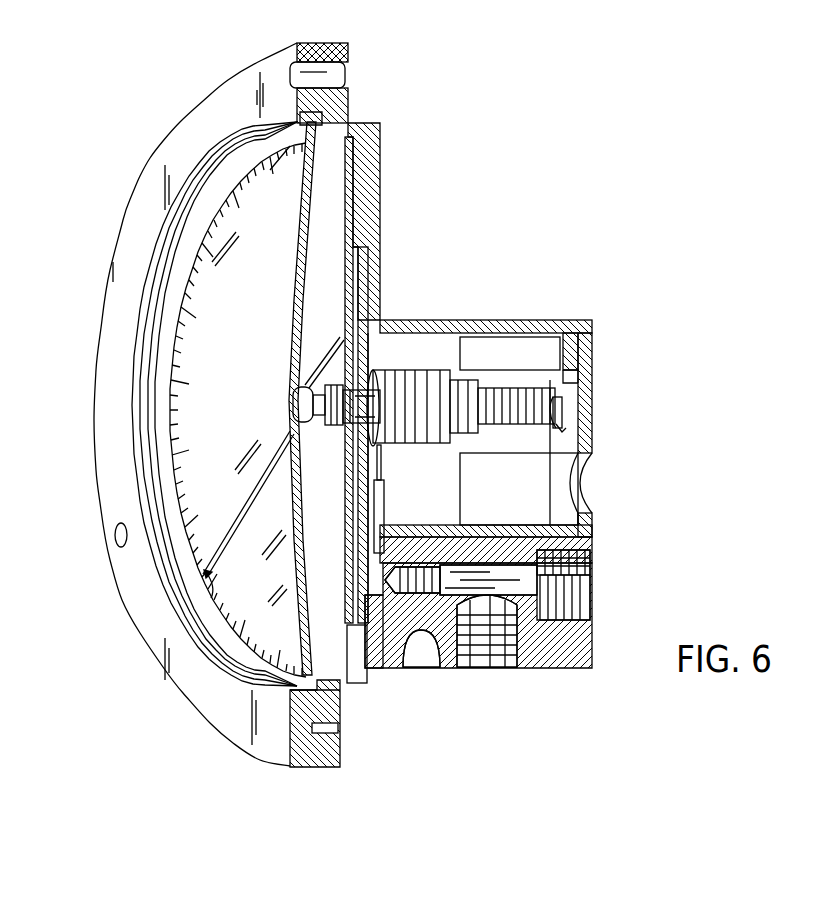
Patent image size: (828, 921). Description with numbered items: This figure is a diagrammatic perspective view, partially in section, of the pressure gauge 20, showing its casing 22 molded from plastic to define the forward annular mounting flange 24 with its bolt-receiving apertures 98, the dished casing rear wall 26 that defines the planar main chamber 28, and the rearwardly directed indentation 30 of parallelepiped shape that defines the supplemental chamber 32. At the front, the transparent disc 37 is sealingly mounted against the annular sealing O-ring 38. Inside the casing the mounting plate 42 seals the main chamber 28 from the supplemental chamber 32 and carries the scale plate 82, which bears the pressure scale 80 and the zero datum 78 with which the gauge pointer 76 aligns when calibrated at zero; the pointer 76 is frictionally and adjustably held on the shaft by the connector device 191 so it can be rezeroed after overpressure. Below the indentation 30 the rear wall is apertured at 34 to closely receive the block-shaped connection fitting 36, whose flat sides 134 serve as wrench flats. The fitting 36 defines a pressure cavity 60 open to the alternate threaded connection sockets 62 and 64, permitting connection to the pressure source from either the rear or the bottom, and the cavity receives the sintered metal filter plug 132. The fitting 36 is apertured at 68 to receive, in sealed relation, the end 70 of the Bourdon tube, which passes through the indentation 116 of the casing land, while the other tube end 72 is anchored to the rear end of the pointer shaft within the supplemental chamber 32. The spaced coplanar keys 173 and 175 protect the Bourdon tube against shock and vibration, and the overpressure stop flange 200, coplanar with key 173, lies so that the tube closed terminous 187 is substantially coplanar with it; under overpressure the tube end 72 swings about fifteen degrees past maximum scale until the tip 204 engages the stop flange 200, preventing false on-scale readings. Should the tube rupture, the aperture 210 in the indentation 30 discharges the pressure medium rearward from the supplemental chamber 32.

The pressure gauge 20 is at (455, 100).
The casing 22 is at (384, 183).
The forward annular mounting flange 24 is at (320, 43).
The casing rear wall 26 is at (381, 248).
The main chamber 28 is at (328, 160).
The rearwardly directed indentation 30 is at (510, 321).
The supplemental chamber 32 is at (455, 347).
The aperture 34 is at (383, 663).
The connection fitting 36 is at (584, 678).
The transparent disc 37 is at (282, 618).
The sealing O-ring 38 is at (340, 690).
The mounting plate 42 is at (369, 347).
The pressure cavity 60 is at (527, 580).
The threaded connection socket 62 is at (572, 596).
The threaded connection socket 64 is at (497, 653).
The aperture 68 is at (433, 565).
The end of the Bourdon tube 70 is at (382, 567).
The end of the Bourdon tube 72 is at (563, 411).
The gauge pointer 76 is at (300, 434).
The zero datum 78 is at (288, 616).
The pressure scale 80 is at (168, 436).
The scale plate 82 is at (342, 224).
The aperture 98 is at (335, 47).
The indentation 116 is at (383, 522).
The plug 132 is at (420, 587).
The flat sides 134 is at (420, 653).
The key 173 is at (527, 355).
The key 175 is at (533, 513).
The tube closed terminous 187 is at (555, 428).
The connector device 191 is at (323, 383).
The overpressure stop flange 200 is at (575, 377).
The tip 204 is at (566, 431).
The aperture 210 is at (578, 483).